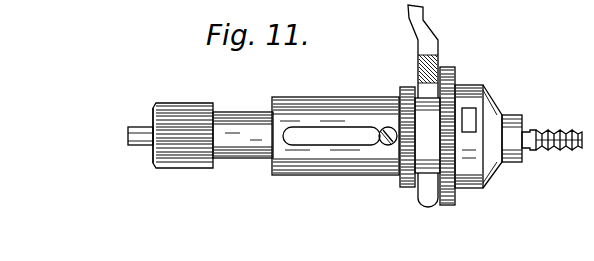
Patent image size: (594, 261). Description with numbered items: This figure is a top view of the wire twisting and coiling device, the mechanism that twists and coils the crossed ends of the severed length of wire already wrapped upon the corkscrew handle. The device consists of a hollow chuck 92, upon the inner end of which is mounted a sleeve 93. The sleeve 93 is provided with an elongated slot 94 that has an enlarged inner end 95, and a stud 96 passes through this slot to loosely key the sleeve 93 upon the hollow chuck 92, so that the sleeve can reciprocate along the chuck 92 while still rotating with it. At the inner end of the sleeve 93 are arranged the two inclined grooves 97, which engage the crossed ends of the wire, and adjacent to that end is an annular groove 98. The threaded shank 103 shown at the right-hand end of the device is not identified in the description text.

The hollow chuck 92 is at (212, 169).
The sleeve 93 is at (310, 97).
The elongated slot 94 is at (331, 136).
The enlarged inner end 95 is at (427, 135).
The stud 96 is at (388, 126).
The inclined grooves 97 is at (496, 93).
The annular groove 98 is at (437, 205).
The shaft / threaded screw 103 is at (127, 134).